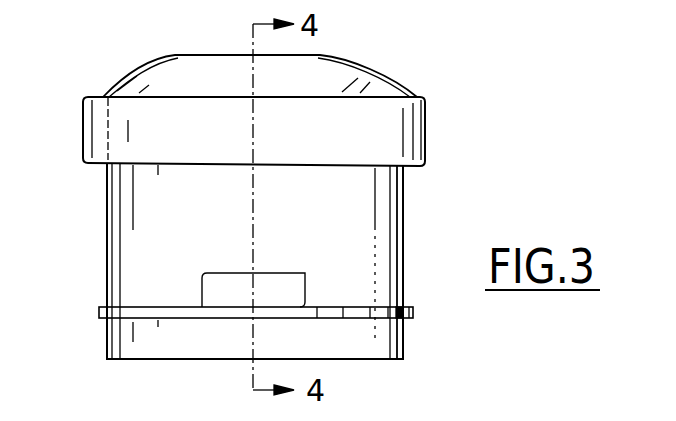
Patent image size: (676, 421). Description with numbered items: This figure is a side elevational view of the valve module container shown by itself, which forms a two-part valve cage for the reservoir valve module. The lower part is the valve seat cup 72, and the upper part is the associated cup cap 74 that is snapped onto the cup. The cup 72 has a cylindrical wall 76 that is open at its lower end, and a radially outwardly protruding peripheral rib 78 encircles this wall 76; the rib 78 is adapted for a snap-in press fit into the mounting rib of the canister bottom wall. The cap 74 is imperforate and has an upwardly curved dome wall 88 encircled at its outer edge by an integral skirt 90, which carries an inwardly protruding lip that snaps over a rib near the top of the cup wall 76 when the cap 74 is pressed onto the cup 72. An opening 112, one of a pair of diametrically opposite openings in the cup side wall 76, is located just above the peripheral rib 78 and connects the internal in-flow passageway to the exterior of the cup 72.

The valve seat cup 72 is at (414, 220).
The cup cap 74 is at (433, 106).
The cylindrical wall 76 is at (114, 232).
The peripheral rib 78 is at (415, 312).
The dome wall 88 is at (173, 63).
The skirt 90 is at (90, 112).
The opening 112 is at (270, 273).